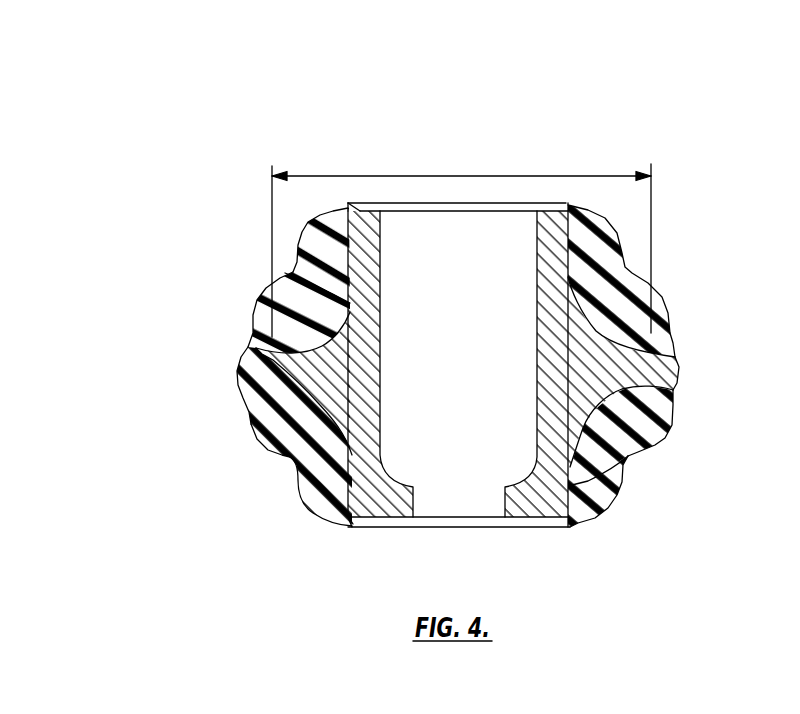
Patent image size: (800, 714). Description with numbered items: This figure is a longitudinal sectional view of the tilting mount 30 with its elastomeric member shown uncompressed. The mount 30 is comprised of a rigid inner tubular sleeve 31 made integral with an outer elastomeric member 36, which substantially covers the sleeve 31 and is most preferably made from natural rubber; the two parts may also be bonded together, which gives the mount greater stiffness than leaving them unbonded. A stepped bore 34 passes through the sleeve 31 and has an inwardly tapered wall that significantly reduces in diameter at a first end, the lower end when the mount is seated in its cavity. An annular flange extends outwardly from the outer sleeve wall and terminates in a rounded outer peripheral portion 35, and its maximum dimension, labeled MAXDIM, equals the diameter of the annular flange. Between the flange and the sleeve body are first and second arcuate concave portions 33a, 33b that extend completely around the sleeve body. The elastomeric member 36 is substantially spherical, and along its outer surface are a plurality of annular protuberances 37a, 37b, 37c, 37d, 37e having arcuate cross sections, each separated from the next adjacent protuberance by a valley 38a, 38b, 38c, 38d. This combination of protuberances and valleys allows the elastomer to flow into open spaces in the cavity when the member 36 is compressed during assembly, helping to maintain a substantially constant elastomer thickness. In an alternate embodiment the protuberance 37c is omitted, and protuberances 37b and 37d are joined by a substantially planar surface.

The mount 30 is at (419, 324).
The inner tubular sleeve 31 is at (527, 498).
The first arcuate concave portion 33a is at (300, 284).
The second arcuate concave portion 33b is at (610, 492).
The bore 34 is at (537, 321).
The rounded outer peripheral portion 35 is at (283, 373).
The outer elastomeric member 36 is at (676, 362).
The annular protuberance 37a is at (312, 508).
The annular protuberance 37b is at (254, 434).
The annular protuberance 37c is at (240, 357).
The annular protuberance 37d is at (253, 313).
The annular protuberance 37e is at (318, 232).
The valley 38a is at (629, 458).
The valley 38b is at (678, 396).
The valley 38c is at (673, 338).
The valley 38d is at (626, 265).